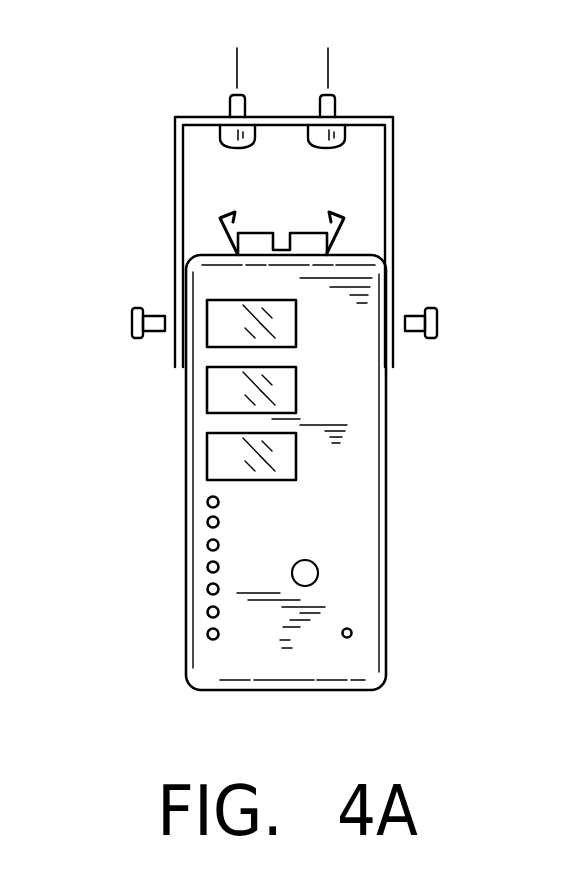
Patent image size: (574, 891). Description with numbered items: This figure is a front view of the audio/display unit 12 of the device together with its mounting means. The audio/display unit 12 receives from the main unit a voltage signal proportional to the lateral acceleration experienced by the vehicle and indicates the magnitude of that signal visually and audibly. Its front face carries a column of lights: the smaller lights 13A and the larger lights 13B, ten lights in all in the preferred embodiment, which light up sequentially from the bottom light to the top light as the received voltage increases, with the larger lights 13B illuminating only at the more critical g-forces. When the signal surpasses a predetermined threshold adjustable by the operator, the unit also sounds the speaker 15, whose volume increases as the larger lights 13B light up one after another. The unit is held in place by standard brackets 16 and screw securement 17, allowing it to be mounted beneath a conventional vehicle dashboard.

The audio/display unit 12 is at (350, 488).
The smaller lights 13A is at (207, 502).
The larger lights 13B is at (228, 467).
The speaker 15 is at (318, 573).
The standard brackets 16 is at (393, 182).
The screw securement 17 is at (230, 108).